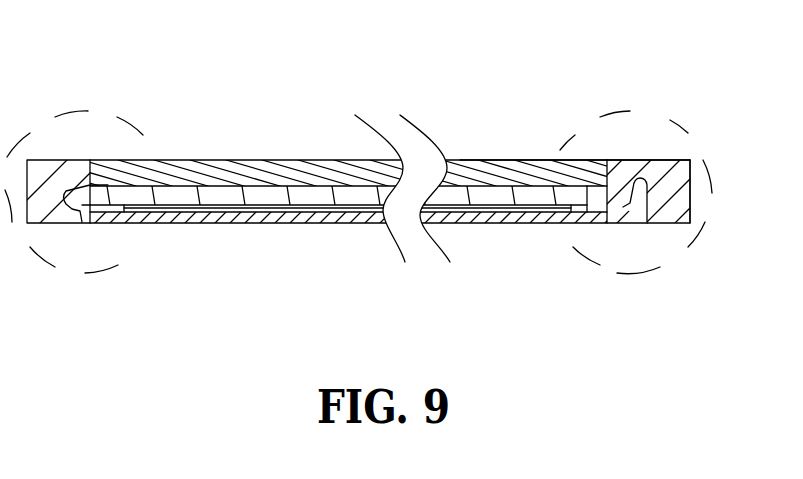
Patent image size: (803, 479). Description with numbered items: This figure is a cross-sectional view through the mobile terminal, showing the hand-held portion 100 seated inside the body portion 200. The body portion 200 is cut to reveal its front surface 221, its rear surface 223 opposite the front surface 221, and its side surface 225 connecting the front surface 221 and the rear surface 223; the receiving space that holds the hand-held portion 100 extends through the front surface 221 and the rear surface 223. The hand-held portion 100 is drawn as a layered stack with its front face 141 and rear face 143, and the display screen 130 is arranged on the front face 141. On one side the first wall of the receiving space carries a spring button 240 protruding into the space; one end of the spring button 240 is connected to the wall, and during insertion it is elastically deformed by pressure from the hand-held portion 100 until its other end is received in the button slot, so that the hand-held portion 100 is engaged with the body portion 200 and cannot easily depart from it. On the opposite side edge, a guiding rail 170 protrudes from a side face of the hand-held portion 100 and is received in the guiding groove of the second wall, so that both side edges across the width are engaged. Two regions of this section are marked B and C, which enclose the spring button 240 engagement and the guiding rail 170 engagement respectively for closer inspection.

The hand-held portion 100 is at (278, 148).
The display screen 130 is at (500, 225).
The front face 141 is at (330, 224).
The rear face 143 is at (493, 158).
The guiding rail 170 is at (80, 219).
The body portion 200 is at (50, 148).
The front surface 221 is at (669, 225).
The rear surface 223 is at (637, 160).
The side surface 225 is at (700, 200).
The spring button 240 is at (619, 201).
The region B is at (583, 255).
The region C is at (157, 223).